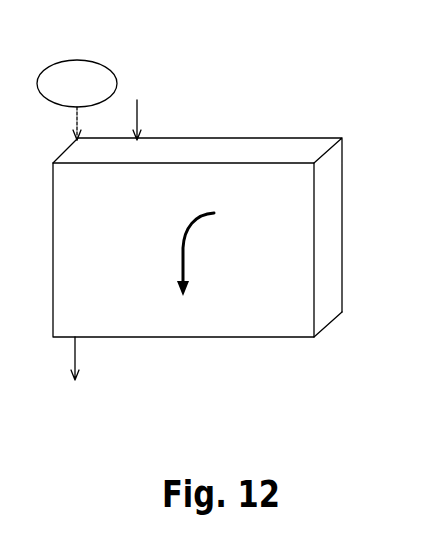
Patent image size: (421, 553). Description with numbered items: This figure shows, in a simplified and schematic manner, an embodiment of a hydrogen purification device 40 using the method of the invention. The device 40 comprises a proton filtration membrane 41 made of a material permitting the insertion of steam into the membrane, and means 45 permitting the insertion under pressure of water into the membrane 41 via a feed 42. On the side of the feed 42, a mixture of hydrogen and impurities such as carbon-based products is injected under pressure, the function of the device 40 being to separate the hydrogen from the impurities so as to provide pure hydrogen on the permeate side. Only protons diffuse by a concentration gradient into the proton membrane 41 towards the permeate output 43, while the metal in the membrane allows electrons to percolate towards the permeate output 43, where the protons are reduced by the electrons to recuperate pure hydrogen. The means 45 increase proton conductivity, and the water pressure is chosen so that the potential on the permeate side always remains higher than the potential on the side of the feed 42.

The hydrogen purification device 40 is at (325, 62).
The proton filtration membrane 41 is at (84, 266).
The feed 42 is at (334, 125).
The permeate output 43 is at (153, 350).
The means permitting the insertion under pressure of water 45 is at (97, 50).